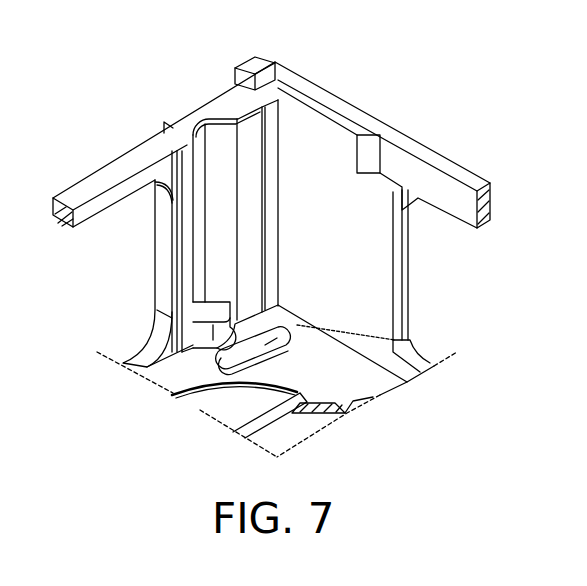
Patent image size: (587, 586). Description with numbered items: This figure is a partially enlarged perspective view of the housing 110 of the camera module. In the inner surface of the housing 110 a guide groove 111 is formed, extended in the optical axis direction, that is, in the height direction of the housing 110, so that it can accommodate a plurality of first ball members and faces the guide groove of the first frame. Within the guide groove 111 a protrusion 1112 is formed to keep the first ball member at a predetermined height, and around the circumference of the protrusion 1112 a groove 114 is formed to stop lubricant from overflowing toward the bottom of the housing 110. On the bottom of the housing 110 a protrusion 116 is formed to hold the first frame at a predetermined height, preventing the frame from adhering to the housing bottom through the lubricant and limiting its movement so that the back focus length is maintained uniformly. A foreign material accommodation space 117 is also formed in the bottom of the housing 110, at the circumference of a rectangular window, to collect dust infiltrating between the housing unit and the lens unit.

The housing 110 is at (447, 170).
The guide groove 111 is at (217, 153).
The protrusion 1112 is at (207, 312).
The groove 114 is at (237, 320).
The protrusion 116 is at (407, 340).
The foreign material accommodation space 117 is at (220, 407).